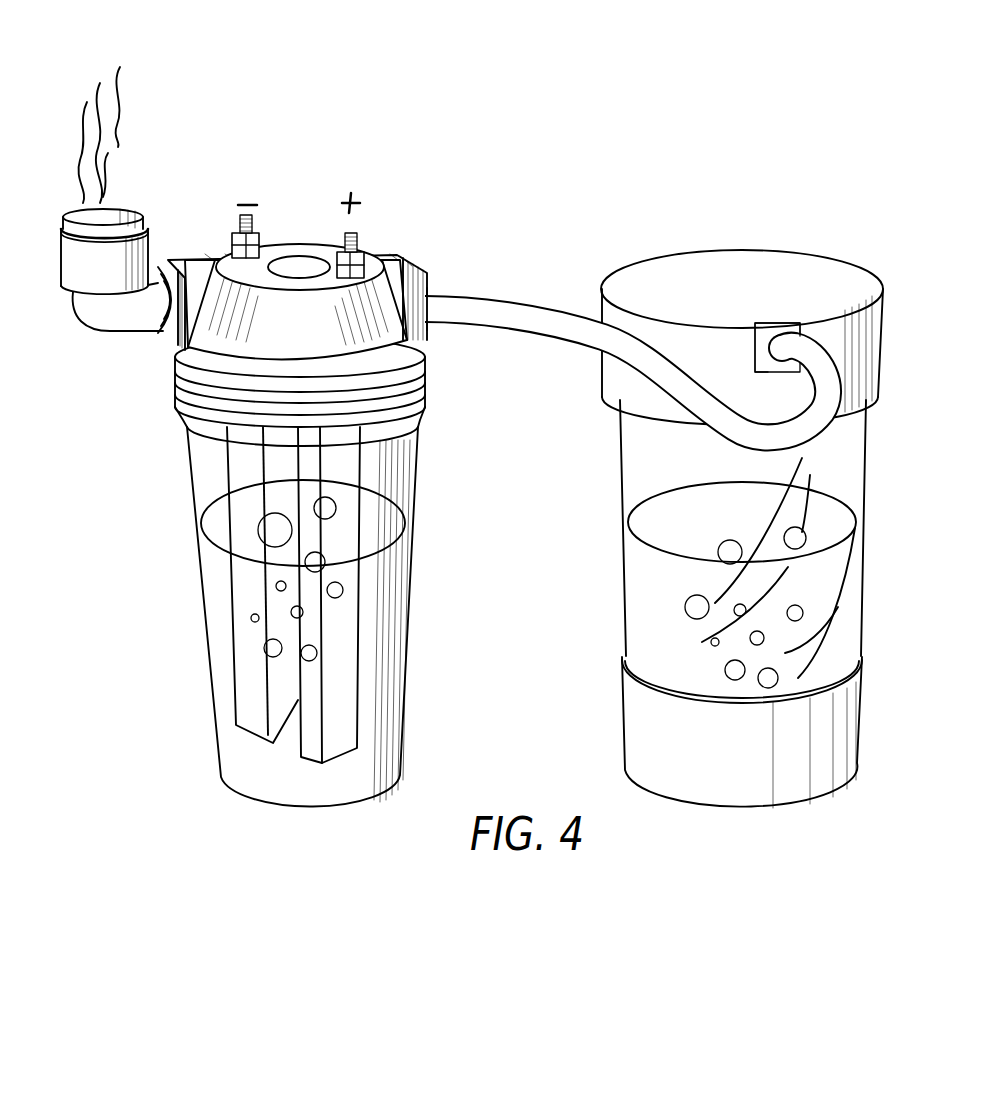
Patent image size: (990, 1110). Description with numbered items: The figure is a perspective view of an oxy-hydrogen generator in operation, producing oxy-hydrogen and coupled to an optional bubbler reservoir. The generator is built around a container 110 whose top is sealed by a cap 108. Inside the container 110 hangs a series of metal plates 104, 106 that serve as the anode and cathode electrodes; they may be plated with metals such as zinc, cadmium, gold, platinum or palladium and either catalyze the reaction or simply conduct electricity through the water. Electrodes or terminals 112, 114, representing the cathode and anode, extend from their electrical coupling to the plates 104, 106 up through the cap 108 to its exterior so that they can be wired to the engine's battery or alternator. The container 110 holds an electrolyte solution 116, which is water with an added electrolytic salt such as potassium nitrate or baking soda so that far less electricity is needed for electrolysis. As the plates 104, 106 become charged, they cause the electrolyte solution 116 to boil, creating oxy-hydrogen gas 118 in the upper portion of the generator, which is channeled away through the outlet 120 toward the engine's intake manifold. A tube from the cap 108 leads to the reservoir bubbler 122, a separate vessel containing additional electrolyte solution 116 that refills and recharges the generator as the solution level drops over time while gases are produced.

The metal plate 104 is at (250, 713).
The metal plate 106 is at (336, 742).
The cap 108 is at (423, 385).
The container 110 is at (208, 476).
The electrode terminal 112 is at (240, 230).
The electrode terminal 114 is at (345, 248).
The electrolyte solution 116 is at (228, 662).
The oxy-hydrogen gas 118 is at (120, 95).
The outlet 120 is at (62, 283).
The reservoir bubbler 122 is at (598, 568).